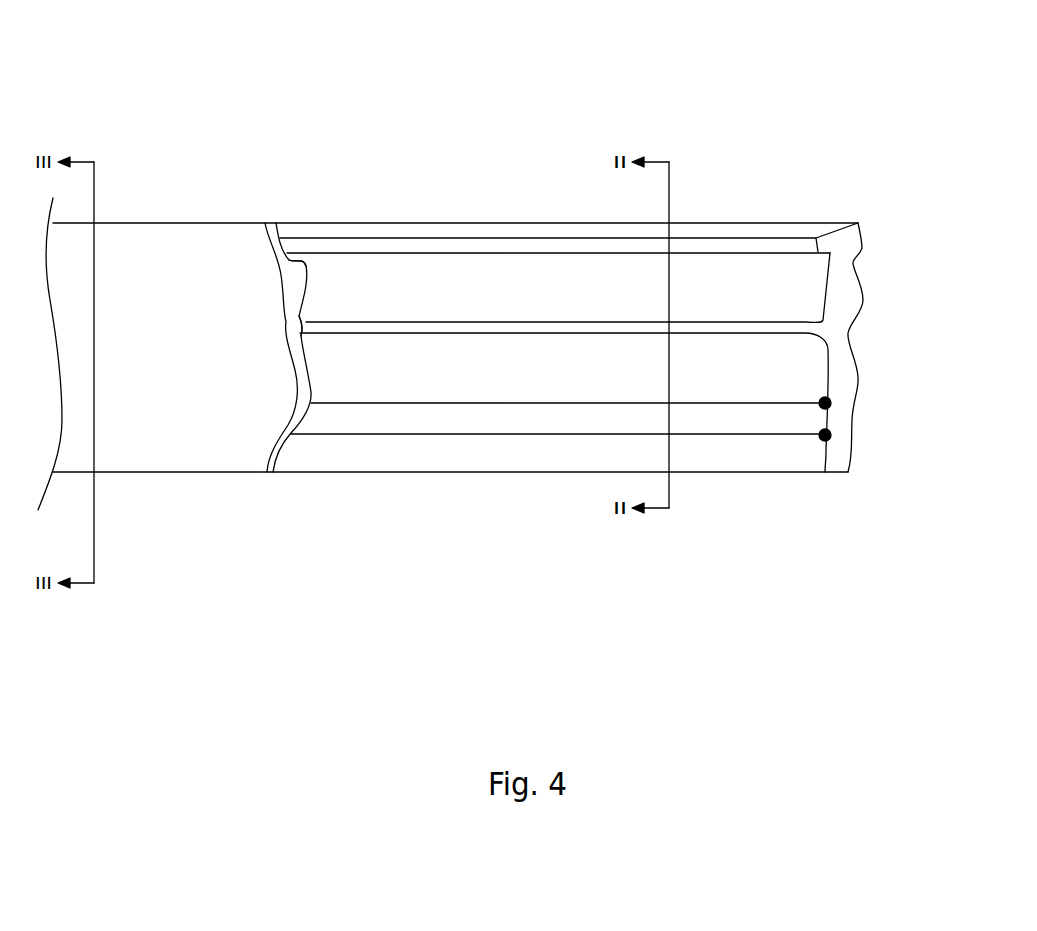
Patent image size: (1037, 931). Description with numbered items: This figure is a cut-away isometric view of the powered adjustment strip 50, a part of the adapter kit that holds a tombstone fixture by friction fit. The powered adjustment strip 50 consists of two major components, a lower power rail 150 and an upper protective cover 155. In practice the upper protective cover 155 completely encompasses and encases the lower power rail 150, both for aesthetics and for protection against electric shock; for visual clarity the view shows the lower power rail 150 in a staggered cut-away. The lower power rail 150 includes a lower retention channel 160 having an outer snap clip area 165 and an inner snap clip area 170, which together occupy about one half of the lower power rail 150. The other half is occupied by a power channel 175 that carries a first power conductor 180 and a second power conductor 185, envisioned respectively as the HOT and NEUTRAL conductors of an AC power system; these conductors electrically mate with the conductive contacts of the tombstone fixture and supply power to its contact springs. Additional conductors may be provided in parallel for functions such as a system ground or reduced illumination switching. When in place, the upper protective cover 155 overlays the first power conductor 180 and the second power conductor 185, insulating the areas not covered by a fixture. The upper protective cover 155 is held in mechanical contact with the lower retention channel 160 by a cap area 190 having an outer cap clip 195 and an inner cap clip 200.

The powered adjustment strip 50 is at (271, 572).
The lower power rail 150 is at (842, 270).
The upper protective cover 155 is at (177, 290).
The lower retention channel 160 is at (711, 283).
The outer snap clip area 165 is at (833, 251).
The inner snap clip area 170 is at (845, 332).
The power channel 175 is at (717, 392).
The first power conductor 180 is at (457, 403).
The second power conductor 185 is at (518, 434).
The cap area 190 is at (292, 296).
The outer cap clip 195 is at (298, 260).
The inner cap clip 200 is at (293, 323).